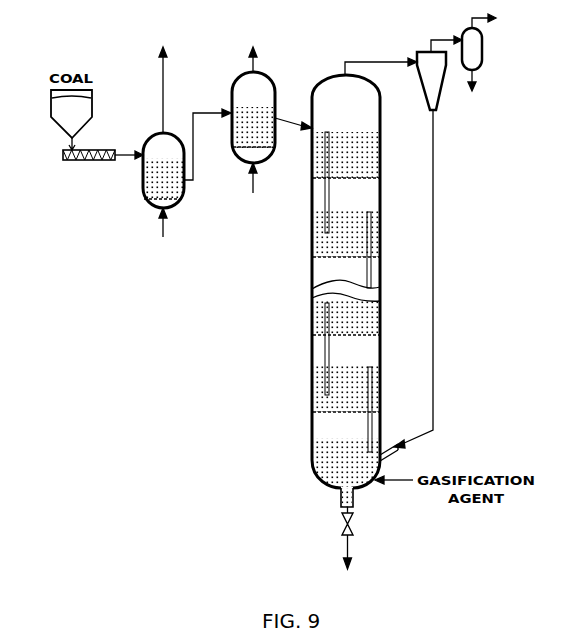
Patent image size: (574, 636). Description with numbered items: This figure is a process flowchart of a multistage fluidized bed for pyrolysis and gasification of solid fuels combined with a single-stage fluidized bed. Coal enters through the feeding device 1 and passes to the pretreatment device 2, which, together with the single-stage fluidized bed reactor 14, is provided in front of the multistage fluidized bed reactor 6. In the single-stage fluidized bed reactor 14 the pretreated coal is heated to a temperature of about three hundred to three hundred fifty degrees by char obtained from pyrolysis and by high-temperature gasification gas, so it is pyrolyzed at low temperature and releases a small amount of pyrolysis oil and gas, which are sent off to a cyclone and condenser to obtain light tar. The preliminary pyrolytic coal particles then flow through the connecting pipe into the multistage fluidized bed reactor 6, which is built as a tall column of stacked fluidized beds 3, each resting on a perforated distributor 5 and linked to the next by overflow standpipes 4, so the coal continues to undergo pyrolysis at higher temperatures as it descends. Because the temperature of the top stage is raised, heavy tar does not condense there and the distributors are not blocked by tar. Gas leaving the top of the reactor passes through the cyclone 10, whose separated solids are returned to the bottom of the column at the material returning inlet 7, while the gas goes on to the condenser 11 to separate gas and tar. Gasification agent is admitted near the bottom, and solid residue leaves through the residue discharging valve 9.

The feeding device 1 is at (63, 152).
The pretreatment device 2 is at (143, 136).
The fluidized beds 3 is at (315, 108).
The overflow standpipes 4 is at (325, 152).
The perforated distributors 5 is at (143, 196).
The multistage fluidized bed reactor 6 is at (327, 72).
The material returning inlet 7 is at (399, 450).
The residue discharging valve 9 is at (344, 526).
The cyclone 10 is at (421, 90).
The condenser 11 is at (461, 32).
The single-stage fluidized bed reactor 14 is at (230, 80).